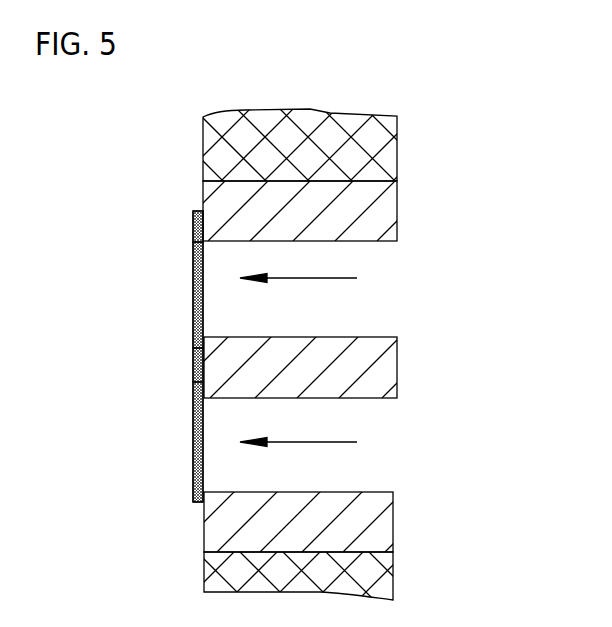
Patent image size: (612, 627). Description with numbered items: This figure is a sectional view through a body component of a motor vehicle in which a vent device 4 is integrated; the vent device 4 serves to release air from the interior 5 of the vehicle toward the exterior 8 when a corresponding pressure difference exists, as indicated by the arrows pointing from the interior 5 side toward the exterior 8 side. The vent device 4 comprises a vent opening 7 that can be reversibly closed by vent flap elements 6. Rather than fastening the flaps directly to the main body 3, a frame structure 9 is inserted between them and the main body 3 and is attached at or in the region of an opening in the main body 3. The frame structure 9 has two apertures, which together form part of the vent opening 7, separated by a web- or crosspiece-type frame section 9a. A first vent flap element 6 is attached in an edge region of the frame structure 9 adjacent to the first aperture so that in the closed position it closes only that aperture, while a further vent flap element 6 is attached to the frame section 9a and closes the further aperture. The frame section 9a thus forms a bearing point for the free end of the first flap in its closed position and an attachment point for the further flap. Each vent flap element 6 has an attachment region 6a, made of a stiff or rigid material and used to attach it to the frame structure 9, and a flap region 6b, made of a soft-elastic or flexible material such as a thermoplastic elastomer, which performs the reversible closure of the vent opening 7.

The main body 3 is at (397, 157).
The frame structure 9 is at (397, 210).
The frame section 9a is at (397, 387).
The vent flap element 6 is at (159, 365).
The attachment region 6a is at (193, 227).
The flap region 6b is at (193, 265).
The vent opening 7 is at (432, 276).
The vent device 4 is at (463, 479).
The interior 5 is at (458, 369).
The exterior 8 is at (101, 353).